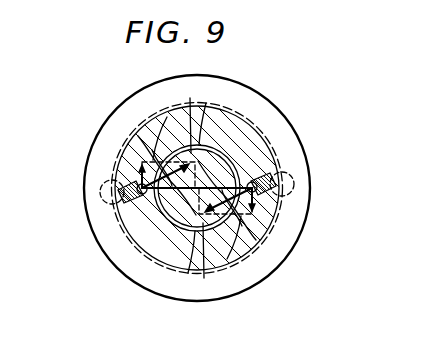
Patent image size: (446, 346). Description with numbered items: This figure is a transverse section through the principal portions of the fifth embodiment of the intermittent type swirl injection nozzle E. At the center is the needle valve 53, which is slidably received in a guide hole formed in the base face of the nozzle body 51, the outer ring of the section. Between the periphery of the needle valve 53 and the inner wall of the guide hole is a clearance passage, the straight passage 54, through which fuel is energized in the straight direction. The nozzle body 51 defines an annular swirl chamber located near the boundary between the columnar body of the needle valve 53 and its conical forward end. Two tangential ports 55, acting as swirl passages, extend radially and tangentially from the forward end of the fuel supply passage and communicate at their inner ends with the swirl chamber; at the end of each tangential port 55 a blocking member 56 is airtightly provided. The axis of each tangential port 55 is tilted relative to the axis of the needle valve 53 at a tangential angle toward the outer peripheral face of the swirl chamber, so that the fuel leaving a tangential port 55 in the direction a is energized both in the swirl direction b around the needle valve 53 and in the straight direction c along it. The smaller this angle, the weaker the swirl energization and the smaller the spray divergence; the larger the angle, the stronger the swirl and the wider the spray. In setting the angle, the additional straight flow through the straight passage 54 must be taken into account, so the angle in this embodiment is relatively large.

The nozzle body 51 is at (310, 180).
The needle valve 53 is at (228, 132).
The straight passage 54 is at (231, 150).
The tangential ports 55 is at (138, 136).
The blocking member 56 is at (121, 191).
The injection nozzle E is at (120, 86).
The direction of fuel flow from the tangential port a is at (166, 115).
The swirl direction b is at (132, 161).
The straight direction c is at (128, 208).